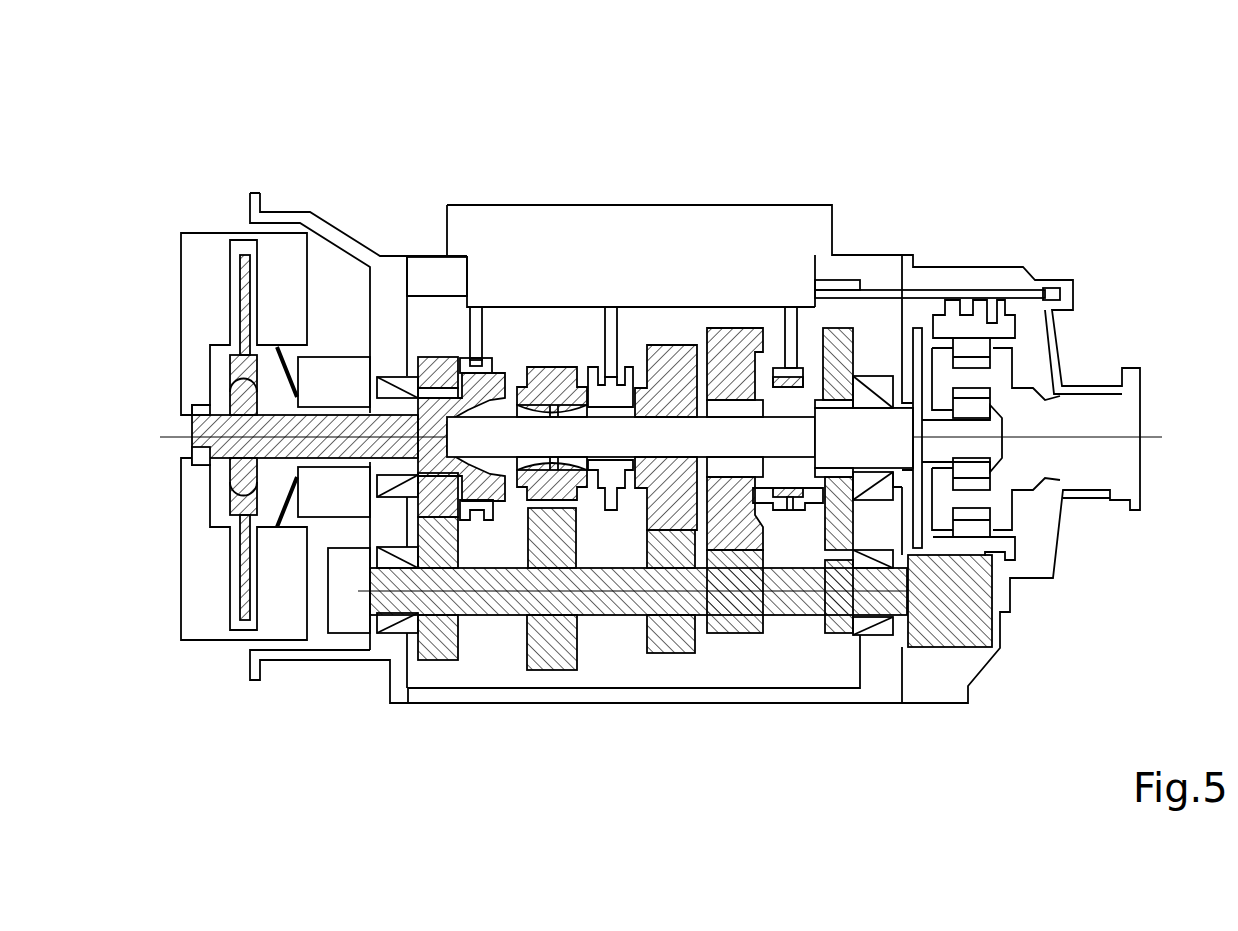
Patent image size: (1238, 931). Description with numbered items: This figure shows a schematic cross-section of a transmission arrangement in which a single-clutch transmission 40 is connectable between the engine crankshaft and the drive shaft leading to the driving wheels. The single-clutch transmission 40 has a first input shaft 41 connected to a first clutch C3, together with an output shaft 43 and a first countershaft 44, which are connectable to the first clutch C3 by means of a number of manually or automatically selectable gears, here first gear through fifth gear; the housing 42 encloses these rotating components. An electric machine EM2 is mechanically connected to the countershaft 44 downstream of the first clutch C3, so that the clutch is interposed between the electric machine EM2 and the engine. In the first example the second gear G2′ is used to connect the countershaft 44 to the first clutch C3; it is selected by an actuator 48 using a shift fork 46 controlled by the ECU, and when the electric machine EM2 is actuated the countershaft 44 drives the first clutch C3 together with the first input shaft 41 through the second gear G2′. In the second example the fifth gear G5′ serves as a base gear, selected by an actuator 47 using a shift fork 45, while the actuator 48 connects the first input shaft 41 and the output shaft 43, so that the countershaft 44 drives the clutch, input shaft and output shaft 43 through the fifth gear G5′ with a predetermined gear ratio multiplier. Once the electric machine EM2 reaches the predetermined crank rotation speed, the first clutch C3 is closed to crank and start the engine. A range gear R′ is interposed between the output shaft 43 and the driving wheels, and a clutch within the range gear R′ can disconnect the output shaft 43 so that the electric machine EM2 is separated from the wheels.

The single-clutch transmission 40 is at (352, 140).
The first input shaft 41 is at (235, 433).
The housing 42 is at (388, 265).
The output shaft 43 is at (662, 430).
The first countershaft 44 is at (612, 615).
The shift fork 45 is at (785, 340).
The shift fork 46 is at (483, 333).
The actuator 47 is at (788, 512).
The actuator 48 is at (478, 512).
The first clutch C3 is at (240, 313).
The second gear G2′ is at (432, 656).
The fifth gear G5′ is at (735, 636).
The range gear R′ is at (955, 320).
The electric machine EM2 is at (975, 616).